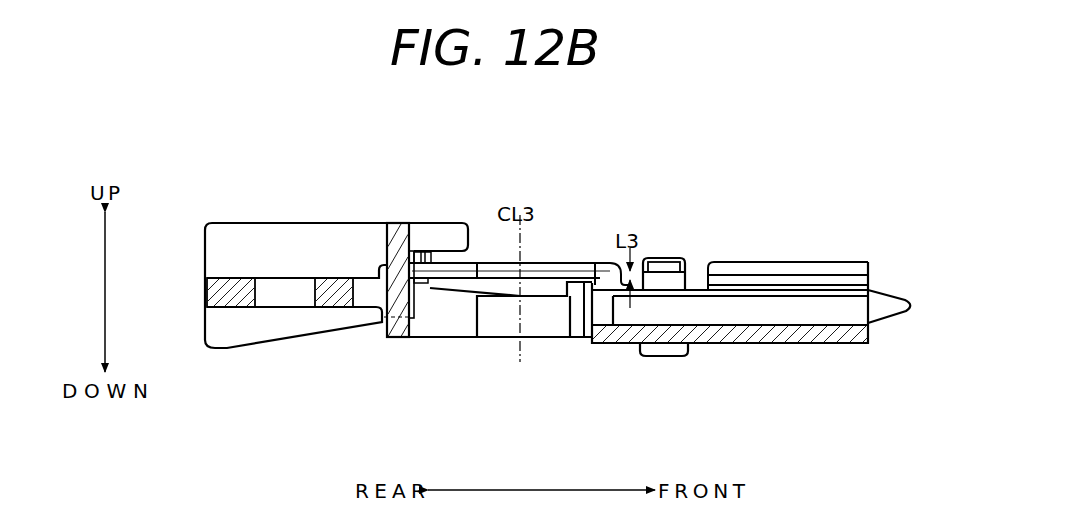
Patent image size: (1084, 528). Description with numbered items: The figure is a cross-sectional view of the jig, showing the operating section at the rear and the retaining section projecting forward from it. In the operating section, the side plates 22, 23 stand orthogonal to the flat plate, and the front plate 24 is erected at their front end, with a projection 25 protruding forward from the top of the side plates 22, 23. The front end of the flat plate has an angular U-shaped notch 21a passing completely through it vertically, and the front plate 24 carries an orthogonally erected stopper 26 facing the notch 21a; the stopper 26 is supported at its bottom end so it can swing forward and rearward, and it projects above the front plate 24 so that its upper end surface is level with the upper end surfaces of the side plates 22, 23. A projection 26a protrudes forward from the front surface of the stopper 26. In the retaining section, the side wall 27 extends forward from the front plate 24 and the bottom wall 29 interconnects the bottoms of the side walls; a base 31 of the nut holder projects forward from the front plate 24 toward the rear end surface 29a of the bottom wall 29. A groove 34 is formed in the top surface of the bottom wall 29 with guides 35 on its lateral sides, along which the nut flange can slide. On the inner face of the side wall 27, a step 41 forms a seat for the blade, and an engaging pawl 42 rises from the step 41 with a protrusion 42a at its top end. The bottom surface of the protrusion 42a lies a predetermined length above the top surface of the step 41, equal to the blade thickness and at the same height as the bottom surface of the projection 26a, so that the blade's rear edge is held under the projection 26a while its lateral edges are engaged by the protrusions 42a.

The notch 21a is at (355, 288).
The side plate 22 is at (279, 272).
The side plate 23 is at (296, 300).
The front plate 24 is at (418, 250).
The projection 25 is at (447, 222).
The stopper 26 is at (385, 250).
The projection 26a is at (424, 280).
The side wall 27 is at (822, 262).
The bottom wall 29 is at (716, 322).
The rear end surface 29a is at (582, 340).
The base 31 is at (543, 328).
The groove 34 is at (727, 322).
The guide 35 is at (853, 287).
The step 41 is at (568, 263).
The engaging pawl 42 is at (677, 237).
The protrusion 42a is at (655, 258).